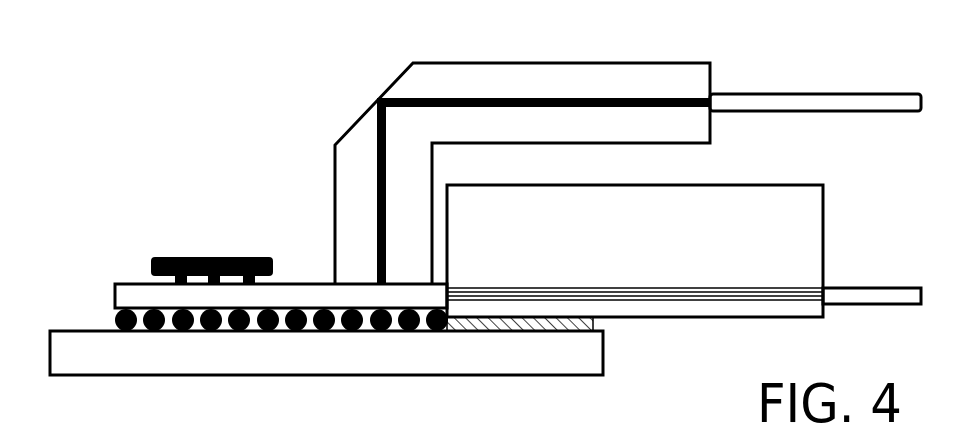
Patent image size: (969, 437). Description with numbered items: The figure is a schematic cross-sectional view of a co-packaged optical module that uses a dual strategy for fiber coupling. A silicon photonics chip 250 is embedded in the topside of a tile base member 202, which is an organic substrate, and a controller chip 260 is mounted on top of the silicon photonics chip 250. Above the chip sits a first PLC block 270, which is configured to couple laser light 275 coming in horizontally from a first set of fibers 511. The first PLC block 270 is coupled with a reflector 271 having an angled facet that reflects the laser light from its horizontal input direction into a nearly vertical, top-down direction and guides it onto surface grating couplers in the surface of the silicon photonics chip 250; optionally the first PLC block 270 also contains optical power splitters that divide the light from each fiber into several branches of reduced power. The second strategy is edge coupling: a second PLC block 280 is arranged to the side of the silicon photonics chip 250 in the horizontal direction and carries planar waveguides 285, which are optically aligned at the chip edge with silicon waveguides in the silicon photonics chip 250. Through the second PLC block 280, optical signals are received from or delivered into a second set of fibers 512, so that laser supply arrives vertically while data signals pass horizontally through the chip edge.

The tile base member 202 is at (88, 340).
The silicon photonics chip 250 is at (315, 283).
The controller chip 260 is at (217, 257).
The first PLC block 270 is at (537, 62).
The reflector 271 is at (383, 95).
The laser light 275 is at (617, 100).
The second PLC block 280 is at (763, 157).
The planar waveguides 285 is at (748, 298).
The first set of fibers 511 is at (842, 93).
The second set of fibers 512 is at (893, 287).